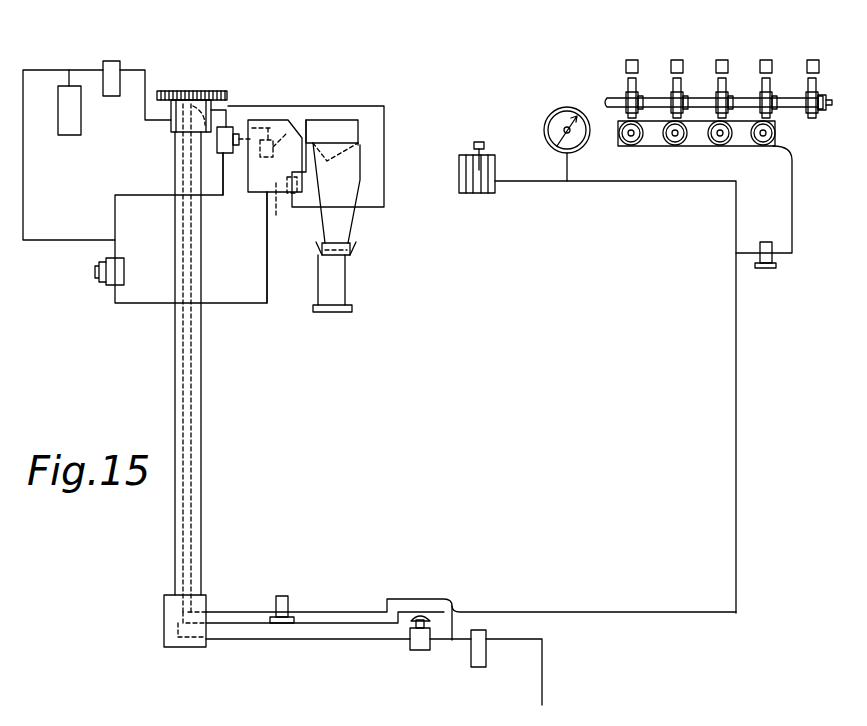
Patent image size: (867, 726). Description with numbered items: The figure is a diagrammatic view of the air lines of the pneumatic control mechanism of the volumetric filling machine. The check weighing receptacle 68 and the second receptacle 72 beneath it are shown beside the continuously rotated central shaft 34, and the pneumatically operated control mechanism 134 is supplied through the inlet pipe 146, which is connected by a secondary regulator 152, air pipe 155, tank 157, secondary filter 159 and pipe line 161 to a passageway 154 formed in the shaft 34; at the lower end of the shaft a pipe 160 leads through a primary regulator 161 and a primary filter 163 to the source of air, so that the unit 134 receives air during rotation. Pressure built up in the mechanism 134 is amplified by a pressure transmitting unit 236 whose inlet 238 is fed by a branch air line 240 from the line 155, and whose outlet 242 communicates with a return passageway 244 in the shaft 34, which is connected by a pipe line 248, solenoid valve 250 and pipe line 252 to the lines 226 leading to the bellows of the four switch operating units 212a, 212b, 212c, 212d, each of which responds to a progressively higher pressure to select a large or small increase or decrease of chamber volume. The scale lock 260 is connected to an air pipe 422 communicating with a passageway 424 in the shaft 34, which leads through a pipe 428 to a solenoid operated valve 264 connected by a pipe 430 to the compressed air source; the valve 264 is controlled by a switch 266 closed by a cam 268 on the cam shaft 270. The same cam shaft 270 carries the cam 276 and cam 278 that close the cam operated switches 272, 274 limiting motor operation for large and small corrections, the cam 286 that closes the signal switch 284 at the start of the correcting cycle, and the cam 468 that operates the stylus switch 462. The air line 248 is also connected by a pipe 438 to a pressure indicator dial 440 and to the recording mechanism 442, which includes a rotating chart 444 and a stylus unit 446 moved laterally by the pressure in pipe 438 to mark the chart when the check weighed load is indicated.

The central shaft 34 is at (202, 387).
The weighing receptacle 68 is at (358, 136).
The second receptacle 72 is at (354, 192).
The pneumatically operated control mechanism 134 is at (310, 104).
The inlet pipe 146 is at (266, 262).
The secondary regulator 152 is at (108, 285).
The passageway 154 is at (183, 422).
The air pipe 155 is at (78, 242).
The tank 157 is at (70, 136).
The secondary filter 159 is at (112, 97).
The pipe 160 is at (292, 640).
The pipe line / primary regulator 161 is at (160, 58).
The primary filter 163 is at (476, 668).
The first operating unit 212a is at (775, 159).
The second operating unit 212b is at (720, 142).
The third operating unit 212c is at (630, 147).
The fourth operating unit 212d is at (675, 142).
The lines 226 is at (776, 131).
The pressure transmitting unit 236 is at (298, 120).
The inlet 238 is at (223, 185).
The branch air line 240 is at (158, 186).
The outlet 242 is at (232, 128).
The return passageway 244 is at (186, 112).
The pipe line 248 is at (736, 405).
The solenoid valve 250 is at (766, 268).
The pipe line 252 is at (792, 208).
The pneumatically operated scale lock unit 260 is at (288, 194).
The solenoid operated valve 264 is at (314, 568).
The switch 266 is at (673, 62).
The cam 268 is at (677, 79).
The cam shaft 270 is at (604, 100).
The cam operated switch 272 is at (722, 60).
The cam operated switch 274 is at (772, 60).
The cam 276 is at (720, 88).
The cam 278 is at (757, 88).
The signal switch 284 is at (813, 62).
The cam 286 is at (808, 90).
The air pipe 422 is at (229, 108).
The passageway 424 is at (193, 460).
The pipe 428 is at (257, 586).
The pipe 430 is at (337, 612).
The pipe 438 is at (735, 232).
The pressure indicator dial 440 is at (548, 118).
The recording mechanism 442 is at (491, 203).
The chart 444 is at (459, 166).
The stylus unit 446 is at (497, 128).
The cam operated switch 462 is at (626, 62).
The cam 468 is at (629, 79).